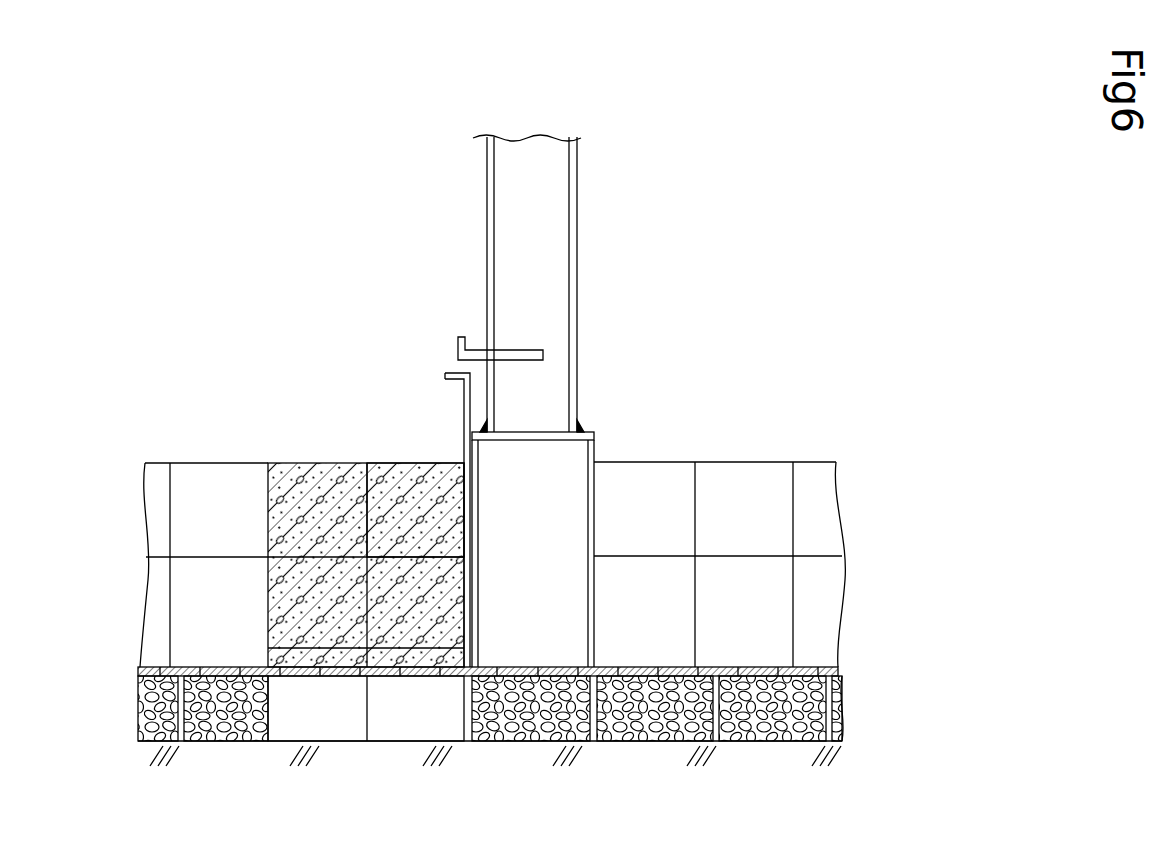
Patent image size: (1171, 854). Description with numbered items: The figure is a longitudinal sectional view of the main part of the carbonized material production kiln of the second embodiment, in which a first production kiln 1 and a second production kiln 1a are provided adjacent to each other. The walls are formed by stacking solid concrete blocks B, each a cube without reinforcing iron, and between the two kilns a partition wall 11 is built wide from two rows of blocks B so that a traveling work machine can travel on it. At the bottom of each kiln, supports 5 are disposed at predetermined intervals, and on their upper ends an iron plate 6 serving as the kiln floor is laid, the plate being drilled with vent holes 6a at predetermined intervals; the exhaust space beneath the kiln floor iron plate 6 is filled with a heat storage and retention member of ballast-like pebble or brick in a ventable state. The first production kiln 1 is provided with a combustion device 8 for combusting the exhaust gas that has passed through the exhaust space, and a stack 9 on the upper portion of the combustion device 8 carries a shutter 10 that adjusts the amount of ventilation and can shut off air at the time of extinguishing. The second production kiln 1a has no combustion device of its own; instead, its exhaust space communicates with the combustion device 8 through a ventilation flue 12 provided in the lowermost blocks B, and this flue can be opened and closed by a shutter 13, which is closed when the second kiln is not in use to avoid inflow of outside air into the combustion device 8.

The carbonized material production kiln 1 is at (761, 443).
The second production kiln 1a is at (231, 443).
The support 5 is at (142, 742).
The iron plate 6 is at (222, 745).
The vent hole 6a is at (158, 675).
The combustion device 8 is at (573, 497).
The stack 9 is at (552, 263).
The shutter 10 is at (466, 337).
The partition wall 11 is at (325, 460).
The ventilation flue 12 is at (445, 708).
The shutter 13 is at (448, 373).
The block B is at (397, 493).